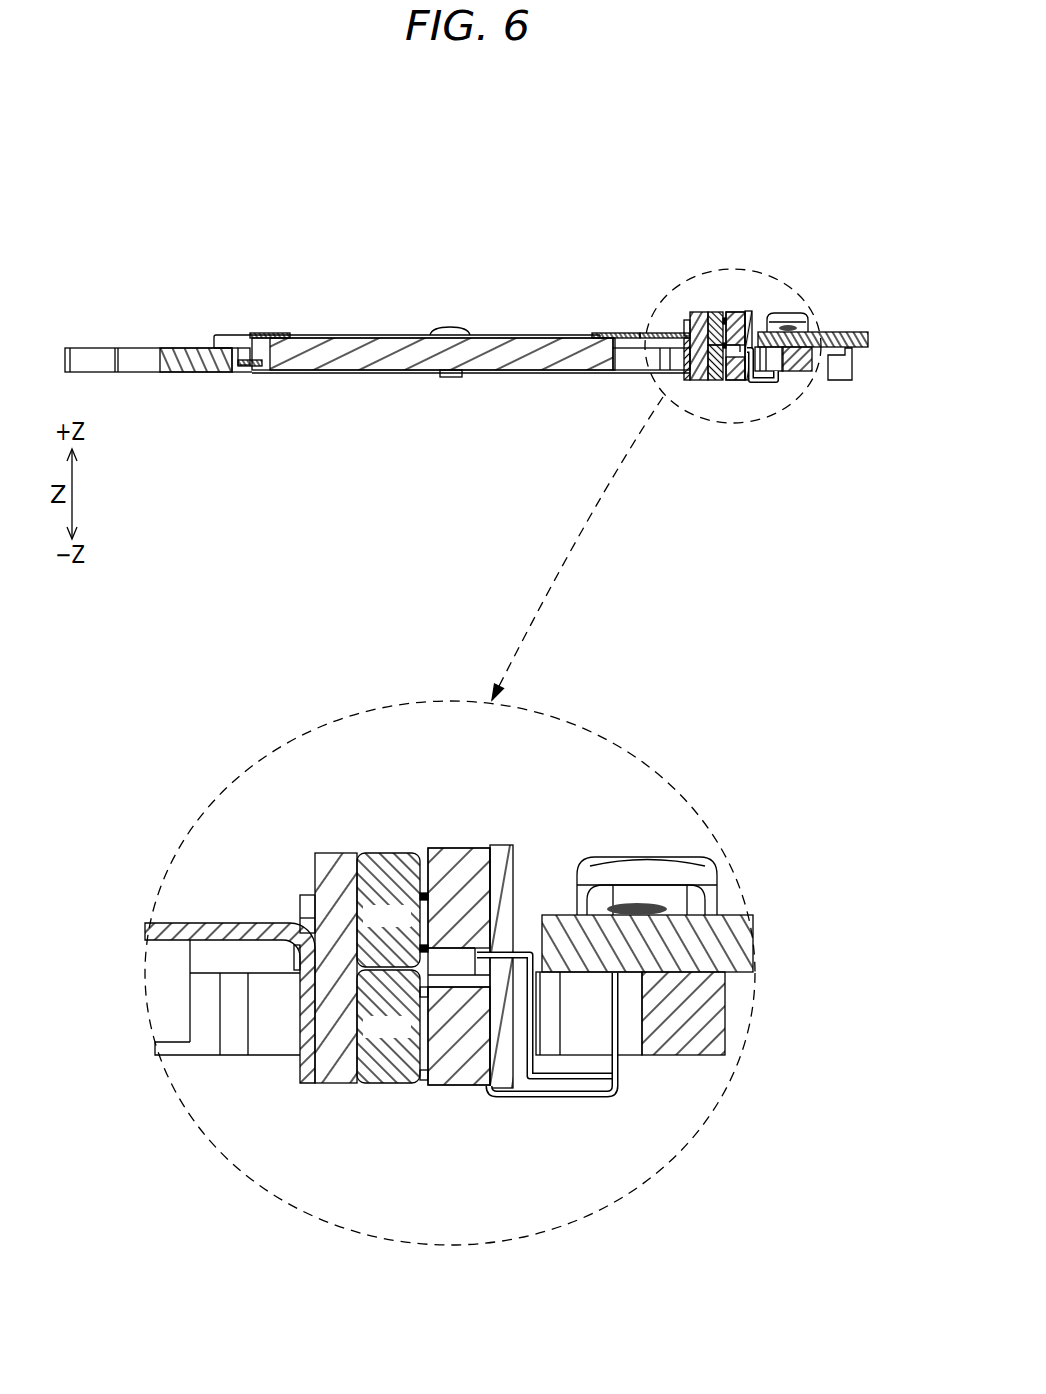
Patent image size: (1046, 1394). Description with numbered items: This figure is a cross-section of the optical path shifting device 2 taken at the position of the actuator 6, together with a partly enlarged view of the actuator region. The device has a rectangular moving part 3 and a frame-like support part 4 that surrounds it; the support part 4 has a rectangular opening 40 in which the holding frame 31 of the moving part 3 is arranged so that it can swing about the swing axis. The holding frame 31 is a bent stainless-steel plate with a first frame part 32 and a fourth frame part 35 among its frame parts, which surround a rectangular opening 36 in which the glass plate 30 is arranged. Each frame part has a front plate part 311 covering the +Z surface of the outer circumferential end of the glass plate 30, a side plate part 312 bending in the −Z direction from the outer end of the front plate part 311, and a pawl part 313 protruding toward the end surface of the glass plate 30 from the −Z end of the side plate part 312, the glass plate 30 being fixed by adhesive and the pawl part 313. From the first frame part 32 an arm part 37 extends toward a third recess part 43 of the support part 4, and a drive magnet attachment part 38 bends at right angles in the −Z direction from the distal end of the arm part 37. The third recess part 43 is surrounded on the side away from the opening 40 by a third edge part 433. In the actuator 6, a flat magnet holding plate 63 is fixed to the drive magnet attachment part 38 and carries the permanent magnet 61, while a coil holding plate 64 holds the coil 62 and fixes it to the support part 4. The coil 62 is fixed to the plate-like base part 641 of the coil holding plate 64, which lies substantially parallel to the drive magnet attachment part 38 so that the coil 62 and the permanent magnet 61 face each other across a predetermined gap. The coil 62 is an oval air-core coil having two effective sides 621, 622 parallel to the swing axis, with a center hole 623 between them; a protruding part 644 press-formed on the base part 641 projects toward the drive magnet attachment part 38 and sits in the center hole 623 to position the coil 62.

The optical path shifting device 2 is at (182, 158).
The moving part 3 is at (405, 203).
The support part 4 is at (178, 348).
The actuator 6 is at (795, 492).
The glass plate 30 is at (343, 334).
The holding frame 31 is at (412, 327).
The first frame part 32 is at (620, 334).
The fourth frame part 35 is at (263, 334).
The opening 36 is at (592, 335).
The arm part 37 is at (673, 334).
The drive magnet attachment part 38 is at (683, 358).
The opening 40 is at (237, 373).
The third recess part 43 is at (672, 729).
The permanent magnet 61 is at (712, 382).
The coil 62 is at (730, 382).
The magnet holding plate 63 is at (697, 382).
The coil holding plate 64 is at (745, 382).
The front plate part 311 is at (426, 283).
The side plate part 312 is at (236, 348).
The pawl part 313 is at (257, 373).
The third edge part 433 is at (717, 1033).
The effective side 621 is at (457, 860).
The effective side 622 is at (470, 1055).
The center hole 623 is at (445, 946).
The base part 641 is at (498, 888).
The protruding part 644 is at (517, 897).